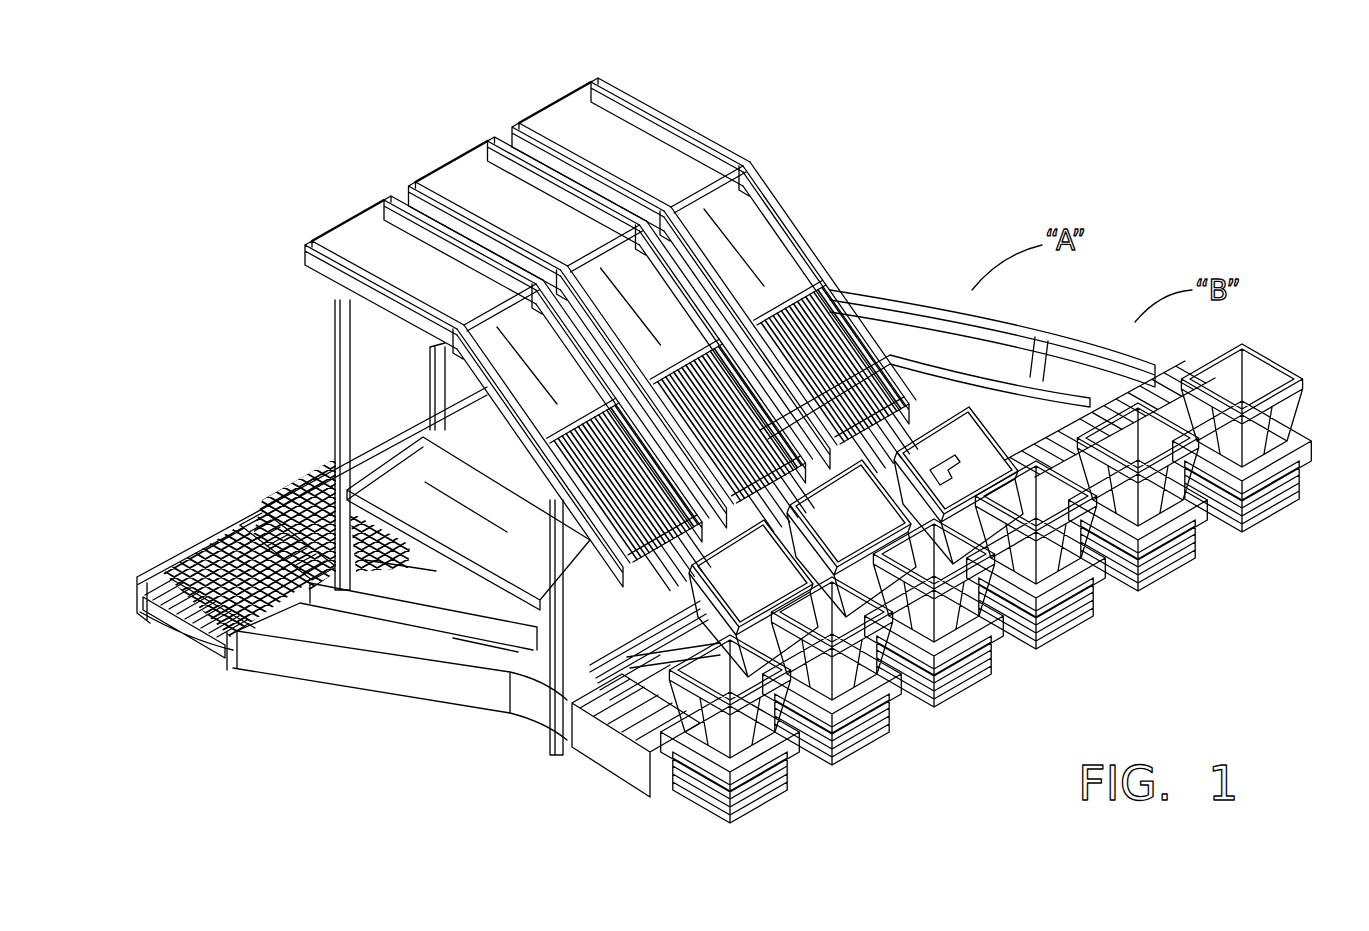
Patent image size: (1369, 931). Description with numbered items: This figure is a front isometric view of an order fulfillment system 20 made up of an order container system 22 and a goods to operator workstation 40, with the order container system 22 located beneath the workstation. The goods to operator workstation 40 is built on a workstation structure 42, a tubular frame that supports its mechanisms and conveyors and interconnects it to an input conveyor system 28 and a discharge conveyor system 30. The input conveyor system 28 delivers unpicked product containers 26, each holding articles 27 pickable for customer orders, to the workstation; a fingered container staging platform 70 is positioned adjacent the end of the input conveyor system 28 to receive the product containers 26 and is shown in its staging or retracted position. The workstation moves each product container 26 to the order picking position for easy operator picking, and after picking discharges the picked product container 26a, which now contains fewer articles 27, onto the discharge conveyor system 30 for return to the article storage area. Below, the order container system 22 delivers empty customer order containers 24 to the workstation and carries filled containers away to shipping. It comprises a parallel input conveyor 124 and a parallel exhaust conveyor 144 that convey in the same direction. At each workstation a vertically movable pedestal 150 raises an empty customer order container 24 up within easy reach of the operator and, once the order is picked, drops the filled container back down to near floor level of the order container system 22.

The order fulfillment system 20 is at (581, 415).
The order container system 22 is at (345, 750).
The customer order container 24 is at (1004, 583).
The product container 26 is at (985, 455).
The picked product container 26a is at (772, 590).
The articles 27 is at (963, 400).
The input conveyor system 28 is at (640, 140).
The discharge conveyor system 30 is at (388, 483).
The goods to operator workstation 40 is at (969, 451).
The workstation structure 42 is at (338, 352).
The container staging platform 70 is at (873, 343).
The input conveyor 124 is at (222, 548).
The exhaust conveyor 144 is at (567, 720).
The vertically movable pedestal 150 is at (790, 763).